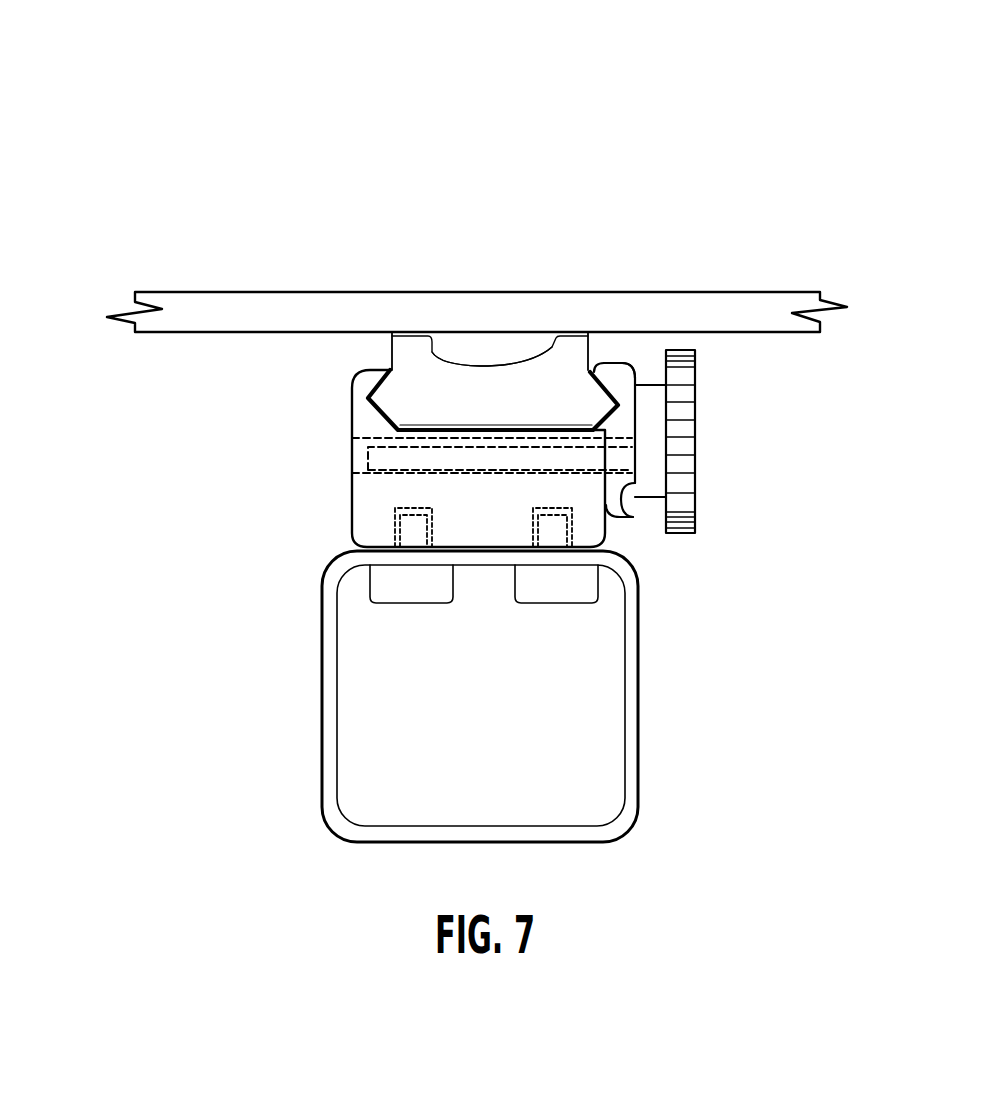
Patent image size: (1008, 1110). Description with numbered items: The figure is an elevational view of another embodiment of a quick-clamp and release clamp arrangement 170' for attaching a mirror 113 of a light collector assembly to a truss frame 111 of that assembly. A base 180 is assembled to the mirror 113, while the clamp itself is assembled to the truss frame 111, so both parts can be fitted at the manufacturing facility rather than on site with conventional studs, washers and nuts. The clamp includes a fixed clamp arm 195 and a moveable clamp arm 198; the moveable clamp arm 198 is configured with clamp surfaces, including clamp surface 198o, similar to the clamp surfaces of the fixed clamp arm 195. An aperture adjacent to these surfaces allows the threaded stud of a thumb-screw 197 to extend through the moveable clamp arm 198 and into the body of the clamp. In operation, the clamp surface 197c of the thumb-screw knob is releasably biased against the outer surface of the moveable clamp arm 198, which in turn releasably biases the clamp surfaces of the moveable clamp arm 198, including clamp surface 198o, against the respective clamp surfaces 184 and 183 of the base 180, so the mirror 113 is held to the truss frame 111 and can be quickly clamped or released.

The quick-clamp and release clamp arrangement 170' is at (124, 84).
The mirror 113 is at (833, 326).
The base 180 is at (420, 365).
The clamp surface 184 is at (592, 367).
The clamp surface 183 is at (600, 420).
The fixed clamp arm 195 is at (362, 423).
The moveable clamp arm 198 is at (643, 378).
The clamp surface 198o is at (608, 386).
The thumb-screw 197 is at (706, 473).
The clamp surface 197c is at (627, 519).
The truss frame 111 is at (640, 736).